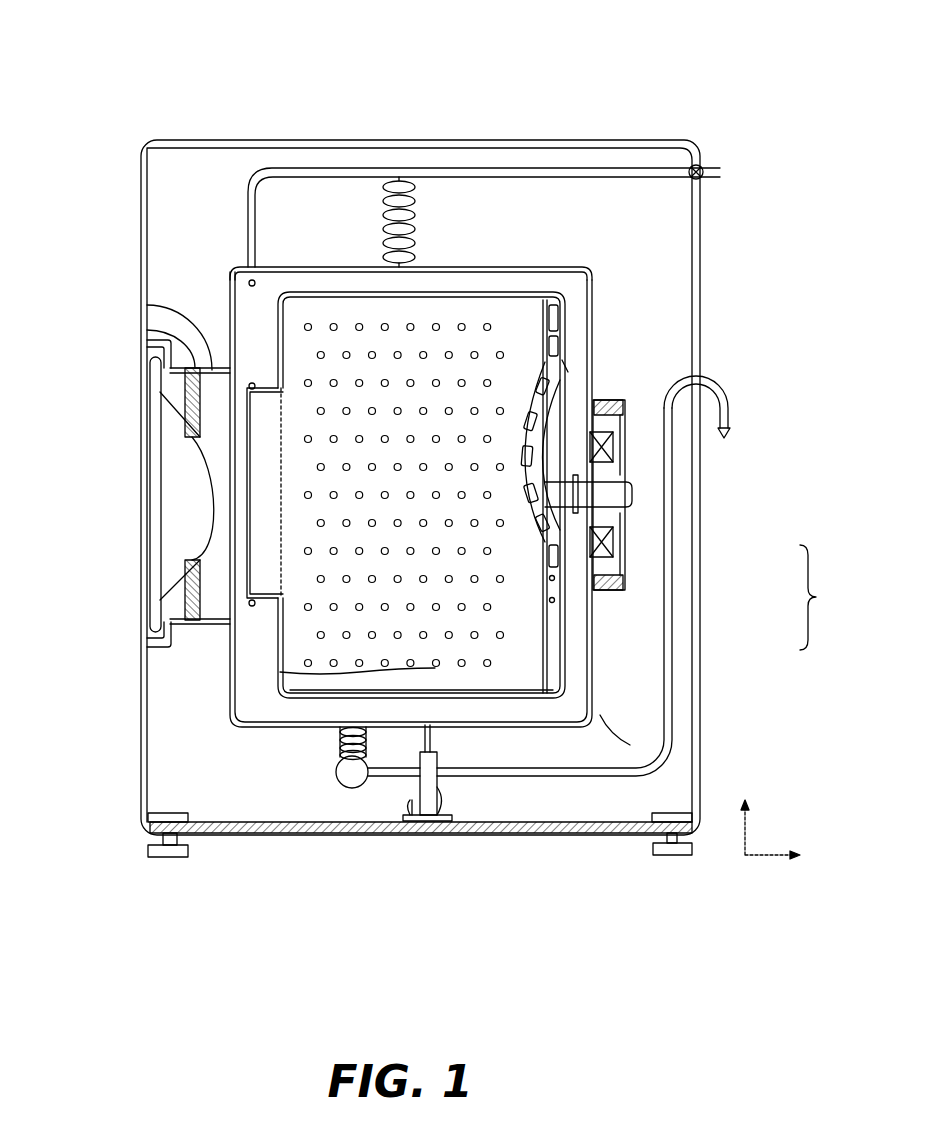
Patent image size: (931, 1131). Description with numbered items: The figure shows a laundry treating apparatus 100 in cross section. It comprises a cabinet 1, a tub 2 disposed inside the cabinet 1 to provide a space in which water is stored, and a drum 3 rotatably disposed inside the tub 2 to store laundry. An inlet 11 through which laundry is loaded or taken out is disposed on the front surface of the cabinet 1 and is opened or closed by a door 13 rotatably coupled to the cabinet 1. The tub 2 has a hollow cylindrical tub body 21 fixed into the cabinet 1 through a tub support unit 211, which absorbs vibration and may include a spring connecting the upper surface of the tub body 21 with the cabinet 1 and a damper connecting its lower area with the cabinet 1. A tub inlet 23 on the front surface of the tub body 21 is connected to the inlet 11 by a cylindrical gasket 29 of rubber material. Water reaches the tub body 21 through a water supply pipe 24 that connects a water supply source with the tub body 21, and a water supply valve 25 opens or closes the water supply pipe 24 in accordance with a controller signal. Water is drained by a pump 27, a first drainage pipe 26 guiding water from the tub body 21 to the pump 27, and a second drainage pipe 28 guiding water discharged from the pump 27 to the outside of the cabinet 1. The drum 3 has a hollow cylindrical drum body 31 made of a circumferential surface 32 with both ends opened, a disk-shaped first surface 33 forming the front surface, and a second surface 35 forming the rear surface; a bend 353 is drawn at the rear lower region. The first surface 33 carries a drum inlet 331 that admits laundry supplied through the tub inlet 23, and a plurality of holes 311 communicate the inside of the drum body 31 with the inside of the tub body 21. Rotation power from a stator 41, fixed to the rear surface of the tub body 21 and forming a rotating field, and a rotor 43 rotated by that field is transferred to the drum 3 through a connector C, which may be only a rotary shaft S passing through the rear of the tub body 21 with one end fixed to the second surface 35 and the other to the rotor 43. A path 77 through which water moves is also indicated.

The laundry treating apparatus 100 is at (85, 22).
The cabinet 1 is at (141, 232).
The inlet 11 is at (162, 392).
The door 13 is at (149, 503).
The tub 2 is at (257, 682).
The tub body 21 is at (303, 267).
The tub support unit 211 is at (420, 190).
The tub inlet 23 is at (147, 309).
The water supply pipe 24 is at (587, 165).
The water supply valve 25 is at (690, 166).
The first drainage pipe 26 is at (340, 742).
The pump 27 is at (353, 784).
The second drainage pipe 28 is at (495, 777).
The gasket 29 is at (147, 342).
The drum 3 is at (300, 623).
The drum body 31 is at (819, 597).
The holes 311 is at (489, 323).
The circumferential surface 32 is at (507, 690).
The first surface 33 is at (435, 668).
The drum inlet 331 is at (265, 407).
The second surface 35 is at (547, 673).
The drain hose bend 353 is at (555, 693).
The stator 41 is at (712, 386).
The rotor 43 is at (625, 443).
The path 77 is at (563, 343).
The connector C is at (567, 370).
The rotary shaft S is at (632, 490).